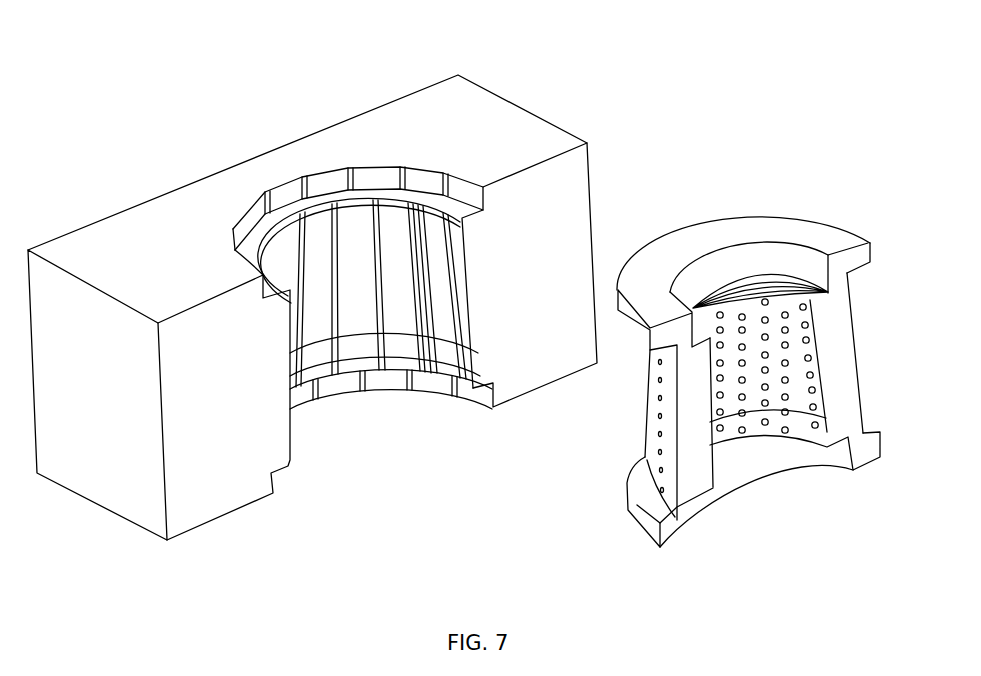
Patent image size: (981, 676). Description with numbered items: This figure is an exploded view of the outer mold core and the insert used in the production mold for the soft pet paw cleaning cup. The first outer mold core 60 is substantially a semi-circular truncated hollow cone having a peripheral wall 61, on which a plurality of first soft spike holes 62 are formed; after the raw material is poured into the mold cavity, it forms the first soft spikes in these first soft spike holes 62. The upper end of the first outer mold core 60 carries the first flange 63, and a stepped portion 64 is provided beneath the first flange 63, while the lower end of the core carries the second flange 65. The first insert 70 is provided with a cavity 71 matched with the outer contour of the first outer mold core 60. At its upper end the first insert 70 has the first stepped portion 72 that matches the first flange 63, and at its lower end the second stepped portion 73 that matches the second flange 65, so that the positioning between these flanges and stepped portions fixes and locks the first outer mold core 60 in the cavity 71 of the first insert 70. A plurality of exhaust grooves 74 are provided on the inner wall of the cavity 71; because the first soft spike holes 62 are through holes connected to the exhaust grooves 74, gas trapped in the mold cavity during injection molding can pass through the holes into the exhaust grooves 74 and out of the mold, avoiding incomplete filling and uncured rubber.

The first outer mold core 60 is at (742, 200).
The peripheral wall 61 is at (843, 377).
The first soft spike holes 62 is at (768, 428).
The first flange 63 is at (828, 242).
The stepped portion 64 is at (738, 280).
The second flange 65 is at (678, 536).
The first insert 70 is at (473, 125).
The cavity 71 is at (353, 420).
The first stepped portion 72 is at (300, 207).
The second stepped portion 73 is at (437, 390).
The exhaust grooves 74 is at (377, 237).